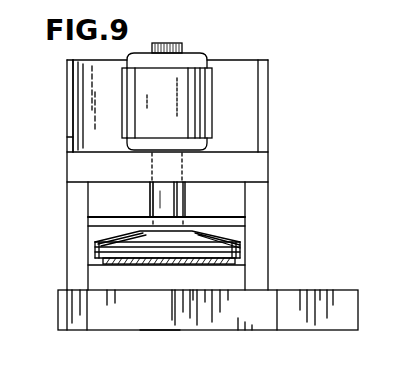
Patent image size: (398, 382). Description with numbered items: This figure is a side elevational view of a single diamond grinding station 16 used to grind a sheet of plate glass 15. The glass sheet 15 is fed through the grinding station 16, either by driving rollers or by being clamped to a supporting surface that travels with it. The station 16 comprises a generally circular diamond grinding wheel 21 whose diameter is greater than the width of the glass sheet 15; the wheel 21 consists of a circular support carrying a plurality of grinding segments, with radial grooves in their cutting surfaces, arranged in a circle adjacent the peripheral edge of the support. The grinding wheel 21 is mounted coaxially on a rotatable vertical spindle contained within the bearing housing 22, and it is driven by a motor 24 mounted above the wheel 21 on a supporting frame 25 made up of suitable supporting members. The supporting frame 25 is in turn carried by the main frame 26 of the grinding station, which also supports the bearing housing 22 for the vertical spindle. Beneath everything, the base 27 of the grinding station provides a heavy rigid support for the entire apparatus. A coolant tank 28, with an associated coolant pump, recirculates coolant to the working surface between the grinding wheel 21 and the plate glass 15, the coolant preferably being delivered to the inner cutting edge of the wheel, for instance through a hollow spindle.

The sheet of plate glass 15 is at (116, 310).
The initial grinding station 16 is at (278, 151).
The diamond grinding wheel 21 is at (237, 240).
The bearing housing 22 is at (185, 197).
The motor 24 is at (211, 72).
The supporting frame 25 is at (68, 100).
The main frame 26 is at (80, 163).
The base 27 is at (158, 327).
The coolant tank 28 is at (297, 322).